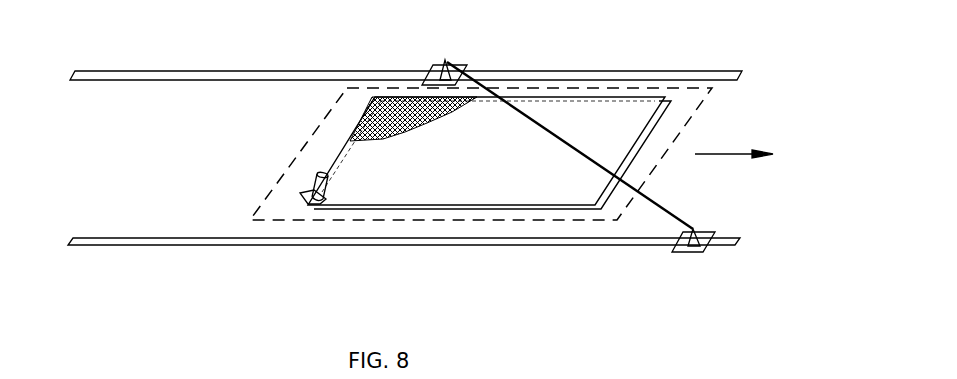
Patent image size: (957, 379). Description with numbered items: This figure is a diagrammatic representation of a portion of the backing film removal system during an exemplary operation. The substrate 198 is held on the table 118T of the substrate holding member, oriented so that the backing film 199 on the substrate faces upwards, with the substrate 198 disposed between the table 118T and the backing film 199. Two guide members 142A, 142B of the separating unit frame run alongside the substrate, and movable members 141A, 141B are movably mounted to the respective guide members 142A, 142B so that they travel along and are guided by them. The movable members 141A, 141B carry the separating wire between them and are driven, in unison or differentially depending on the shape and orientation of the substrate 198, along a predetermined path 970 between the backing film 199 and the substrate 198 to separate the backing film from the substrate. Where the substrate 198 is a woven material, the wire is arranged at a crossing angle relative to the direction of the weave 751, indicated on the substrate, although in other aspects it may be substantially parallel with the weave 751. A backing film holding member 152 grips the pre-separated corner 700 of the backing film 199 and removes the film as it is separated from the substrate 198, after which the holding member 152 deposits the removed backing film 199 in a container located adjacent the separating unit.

The guide member 142A is at (143, 71).
The guide member 142B is at (175, 245).
The movable member 141A is at (447, 65).
The movable member 141B is at (686, 253).
The backing film 199 is at (593, 118).
The substrate 198 is at (360, 210).
The table 118T is at (442, 221).
The weave 751 is at (350, 122).
The backing film holding member 152 is at (316, 182).
The predetermined path 970 is at (720, 154).
The pre-separated corner 700 is at (288, 212).